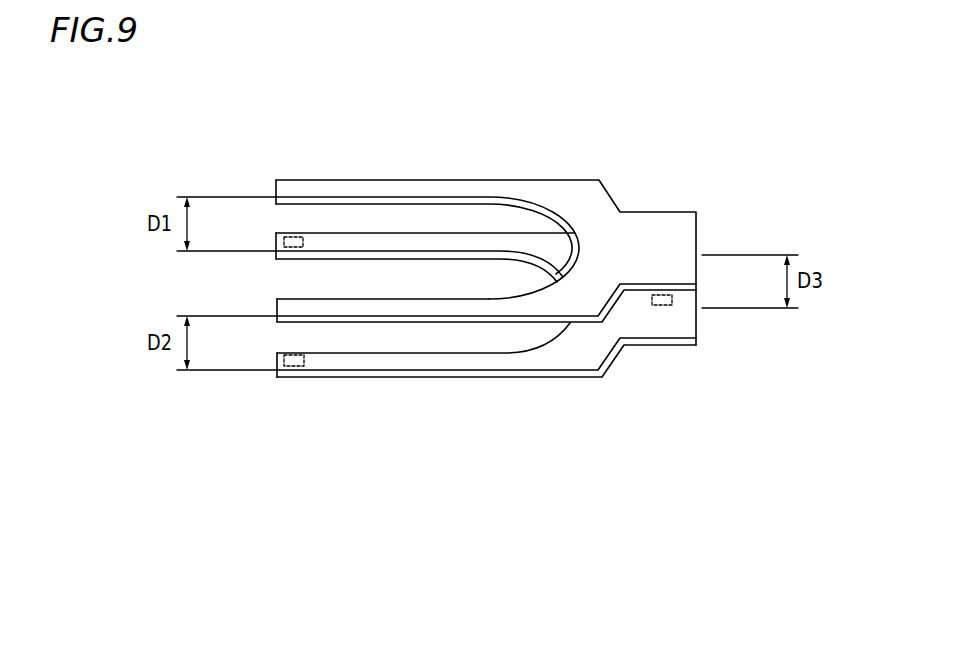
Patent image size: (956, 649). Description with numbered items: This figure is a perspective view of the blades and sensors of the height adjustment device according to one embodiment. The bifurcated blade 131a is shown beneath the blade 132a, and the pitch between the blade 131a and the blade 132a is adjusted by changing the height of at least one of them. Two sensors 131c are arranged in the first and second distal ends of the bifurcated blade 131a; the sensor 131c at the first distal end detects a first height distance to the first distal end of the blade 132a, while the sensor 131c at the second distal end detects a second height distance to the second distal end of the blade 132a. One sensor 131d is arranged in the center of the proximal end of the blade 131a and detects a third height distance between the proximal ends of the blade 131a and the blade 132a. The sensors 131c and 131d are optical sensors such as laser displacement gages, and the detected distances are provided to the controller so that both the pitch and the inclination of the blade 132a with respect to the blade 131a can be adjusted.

The blade 132a is at (577, 190).
The blade 131a is at (580, 378).
The sensor 131c is at (284, 237).
The sensor 131d is at (662, 305).